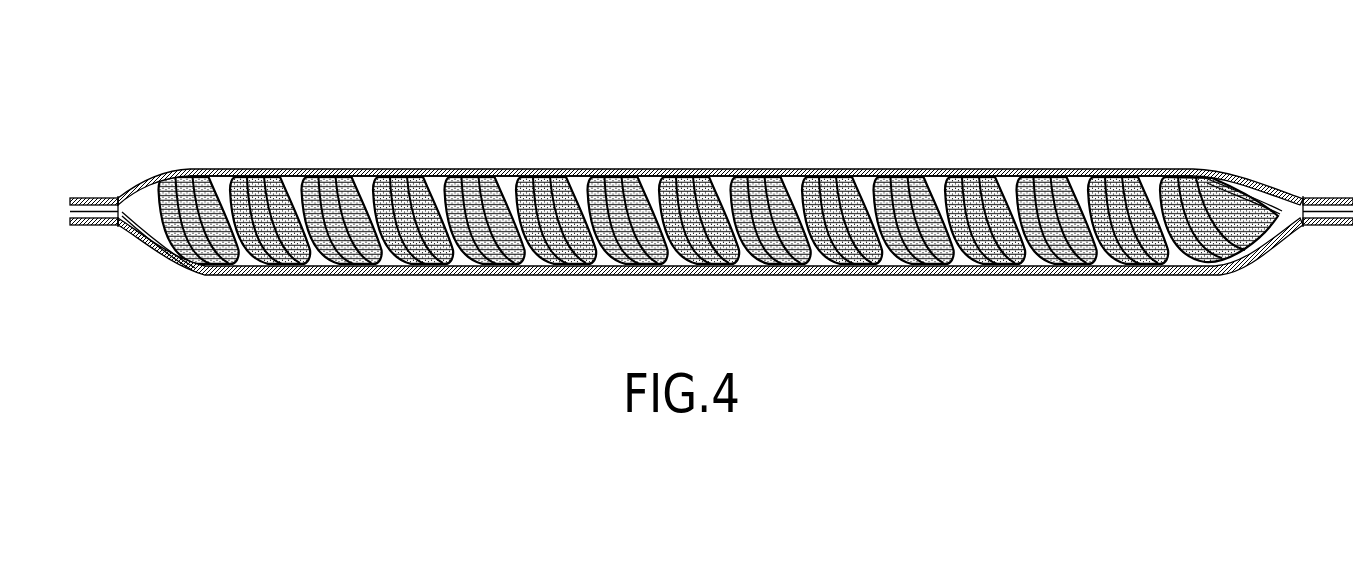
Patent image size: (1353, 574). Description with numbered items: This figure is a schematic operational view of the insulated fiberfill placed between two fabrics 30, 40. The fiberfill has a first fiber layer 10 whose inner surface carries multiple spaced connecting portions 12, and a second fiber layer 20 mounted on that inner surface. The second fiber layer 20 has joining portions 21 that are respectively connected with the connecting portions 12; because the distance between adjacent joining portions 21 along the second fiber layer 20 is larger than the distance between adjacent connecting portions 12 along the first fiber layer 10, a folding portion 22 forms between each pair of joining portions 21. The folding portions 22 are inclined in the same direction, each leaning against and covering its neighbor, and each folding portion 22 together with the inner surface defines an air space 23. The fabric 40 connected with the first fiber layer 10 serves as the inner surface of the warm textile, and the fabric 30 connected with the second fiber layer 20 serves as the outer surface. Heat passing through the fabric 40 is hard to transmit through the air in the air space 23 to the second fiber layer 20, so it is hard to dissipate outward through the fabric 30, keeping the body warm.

The first fiber layer 10 is at (898, 282).
The connecting portions 12 is at (719, 259).
The second fiber layer 20 is at (779, 165).
The joining portions 21 is at (840, 260).
The folding portions 22 is at (660, 177).
The air spaces 23 is at (452, 257).
The fabric 30 is at (925, 171).
The fabric 40 is at (1142, 263).